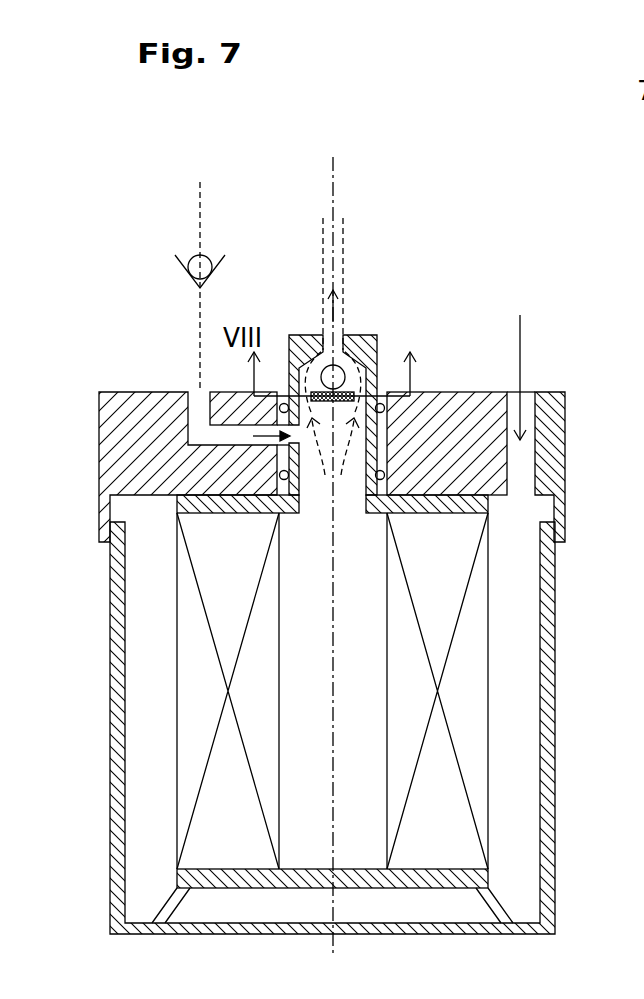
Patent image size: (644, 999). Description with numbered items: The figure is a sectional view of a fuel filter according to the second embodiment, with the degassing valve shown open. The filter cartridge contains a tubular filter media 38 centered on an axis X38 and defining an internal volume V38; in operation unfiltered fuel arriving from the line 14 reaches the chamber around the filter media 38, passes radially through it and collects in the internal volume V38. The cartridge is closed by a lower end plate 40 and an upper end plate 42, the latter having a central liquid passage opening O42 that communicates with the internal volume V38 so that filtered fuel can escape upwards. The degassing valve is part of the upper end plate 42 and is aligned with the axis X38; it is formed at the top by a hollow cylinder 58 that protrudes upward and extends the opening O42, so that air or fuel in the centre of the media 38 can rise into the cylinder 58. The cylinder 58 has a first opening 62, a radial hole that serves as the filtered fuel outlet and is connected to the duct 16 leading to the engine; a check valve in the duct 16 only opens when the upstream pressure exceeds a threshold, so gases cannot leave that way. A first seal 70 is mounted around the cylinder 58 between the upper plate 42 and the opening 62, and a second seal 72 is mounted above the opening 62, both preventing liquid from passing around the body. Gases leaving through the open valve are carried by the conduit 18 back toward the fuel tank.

The line 14 is at (520, 367).
The duct 16 is at (200, 322).
The conduit 18 is at (333, 267).
The filter media 38 is at (455, 690).
The lower end plate 40 is at (230, 880).
The upper end plate 42 is at (438, 505).
The liquid passage opening O42 is at (303, 492).
The hollow cylinder 58 is at (298, 337).
The first opening 62 is at (282, 470).
The first seal 70 is at (190, 488).
The second seal 72 is at (280, 408).
The internal volume V38 is at (337, 813).
The axis X38 is at (338, 572).